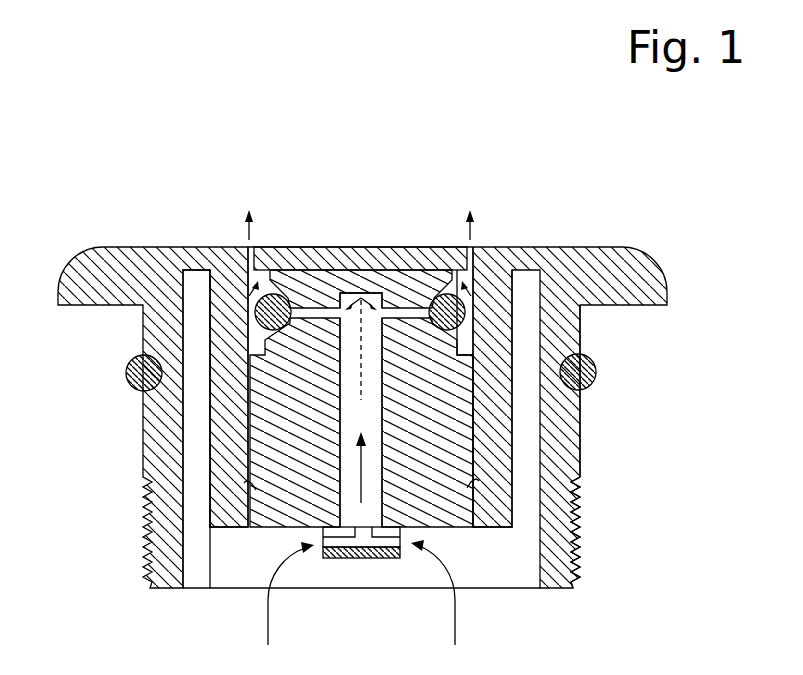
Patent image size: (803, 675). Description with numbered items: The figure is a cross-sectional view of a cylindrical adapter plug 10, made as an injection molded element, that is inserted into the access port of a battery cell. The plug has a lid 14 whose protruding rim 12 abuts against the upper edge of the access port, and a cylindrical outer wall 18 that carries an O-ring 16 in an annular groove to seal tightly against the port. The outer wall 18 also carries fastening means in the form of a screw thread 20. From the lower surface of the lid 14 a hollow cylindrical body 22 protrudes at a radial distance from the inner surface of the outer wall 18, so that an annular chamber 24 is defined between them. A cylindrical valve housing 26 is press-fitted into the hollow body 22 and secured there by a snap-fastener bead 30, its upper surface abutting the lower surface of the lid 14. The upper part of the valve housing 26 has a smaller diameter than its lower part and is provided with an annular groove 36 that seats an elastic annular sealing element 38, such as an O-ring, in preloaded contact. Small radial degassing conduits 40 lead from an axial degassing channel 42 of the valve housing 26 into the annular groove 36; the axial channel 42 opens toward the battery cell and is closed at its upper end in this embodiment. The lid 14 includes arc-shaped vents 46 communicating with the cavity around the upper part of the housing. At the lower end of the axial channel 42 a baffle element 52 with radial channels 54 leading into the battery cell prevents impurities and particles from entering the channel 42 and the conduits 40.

The adapter plug 10 is at (76, 211).
The protruding rim 12 is at (640, 275).
The lid 14 is at (402, 258).
The O-ring 16 is at (588, 372).
The cylindrical outer wall 18 is at (572, 453).
The screw thread 20 is at (572, 531).
The hollow cylindrical body 22 is at (225, 433).
The annular chamber 24 is at (195, 478).
The valve housing 26 is at (253, 488).
The snap-fastener bead 30 is at (472, 485).
The annular groove 36 is at (278, 295).
The annular sealing element 38 is at (442, 296).
The radial degassing conduits 40 is at (305, 300).
The axial degassing channel 42 is at (358, 292).
The vents 46 is at (468, 280).
The baffle element 52 is at (345, 558).
The radial channels 54 is at (385, 558).